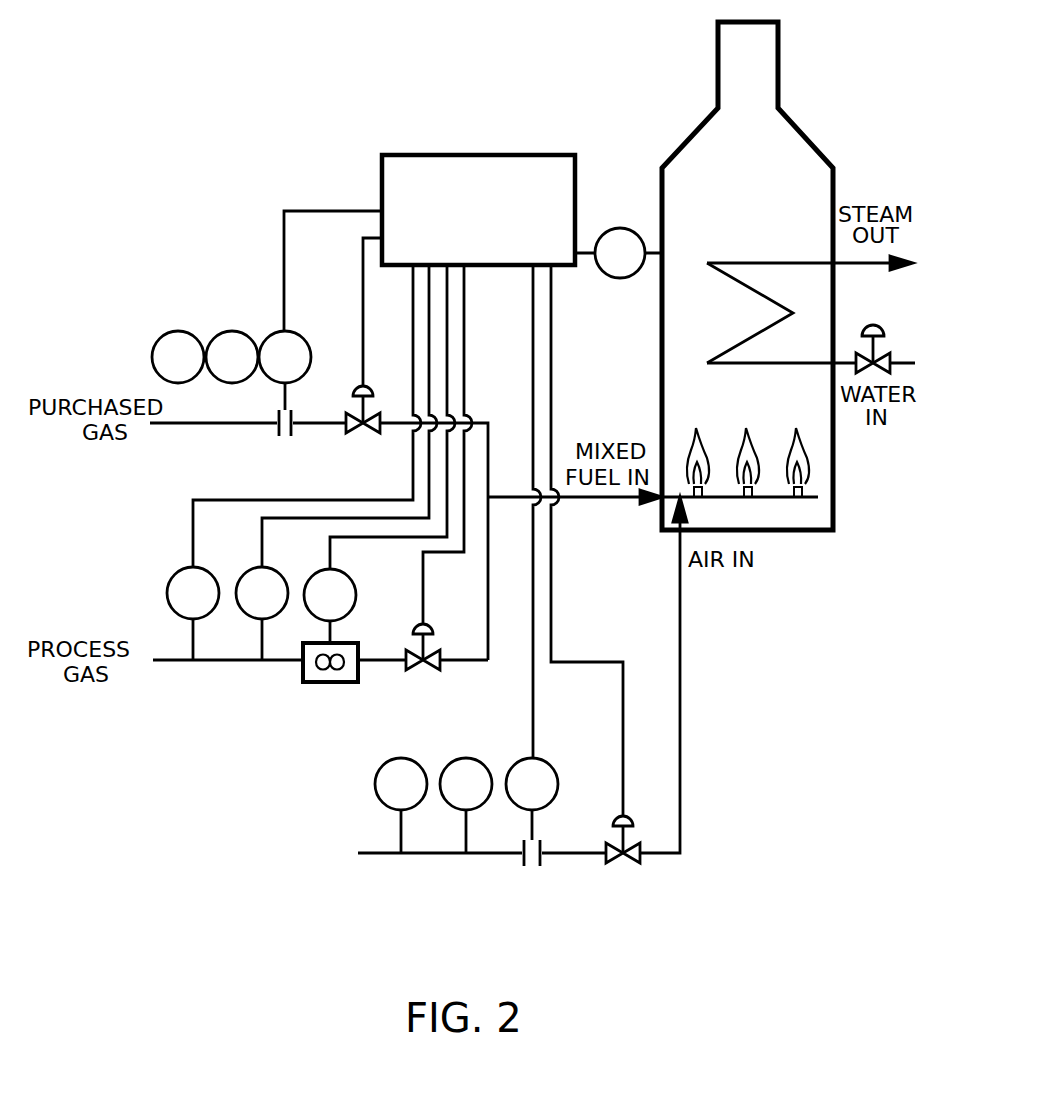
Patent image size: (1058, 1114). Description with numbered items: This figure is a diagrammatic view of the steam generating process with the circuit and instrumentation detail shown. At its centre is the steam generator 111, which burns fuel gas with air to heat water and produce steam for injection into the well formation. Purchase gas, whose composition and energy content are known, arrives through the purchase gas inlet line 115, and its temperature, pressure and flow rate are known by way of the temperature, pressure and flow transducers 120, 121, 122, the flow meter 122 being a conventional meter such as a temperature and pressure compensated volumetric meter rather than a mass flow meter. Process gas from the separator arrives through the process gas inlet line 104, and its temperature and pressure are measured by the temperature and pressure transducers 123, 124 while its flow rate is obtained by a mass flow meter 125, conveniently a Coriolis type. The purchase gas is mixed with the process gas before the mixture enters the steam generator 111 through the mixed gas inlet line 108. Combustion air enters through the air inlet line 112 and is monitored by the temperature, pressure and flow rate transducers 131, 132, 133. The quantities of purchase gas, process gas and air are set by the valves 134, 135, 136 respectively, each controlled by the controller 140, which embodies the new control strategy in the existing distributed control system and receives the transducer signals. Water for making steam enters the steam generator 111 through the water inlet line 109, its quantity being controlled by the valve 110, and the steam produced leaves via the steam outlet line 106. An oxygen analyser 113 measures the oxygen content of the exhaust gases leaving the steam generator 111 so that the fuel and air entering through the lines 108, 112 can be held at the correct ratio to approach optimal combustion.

The process gas inlet line 104 is at (170, 661).
The steam outlet line 106 is at (844, 264).
The mixed gas inlet line 108 is at (610, 500).
The water inlet line 109 is at (905, 360).
The water valve 110 is at (882, 304).
The steam generator 111 is at (835, 467).
The air inlet line 112 is at (683, 651).
The oxygen analyser 113 is at (622, 228).
The purchase gas inlet line 115 is at (213, 424).
The temperature transducer 120 is at (180, 331).
The pressure transducer 121 is at (233, 331).
The flow transducer 122 is at (308, 335).
The temperature transducer 123 is at (224, 552).
The pressure transducer 124 is at (276, 571).
The mass flow meter 125 is at (352, 583).
The temperature transducer 131 is at (400, 758).
The pressure transducer 132 is at (466, 758).
The flow rate transducer 133 is at (552, 765).
The purchase gas valve 134 is at (366, 384).
The process gas valve 135 is at (435, 625).
The air valve 136 is at (630, 817).
The controller 140 is at (477, 155).